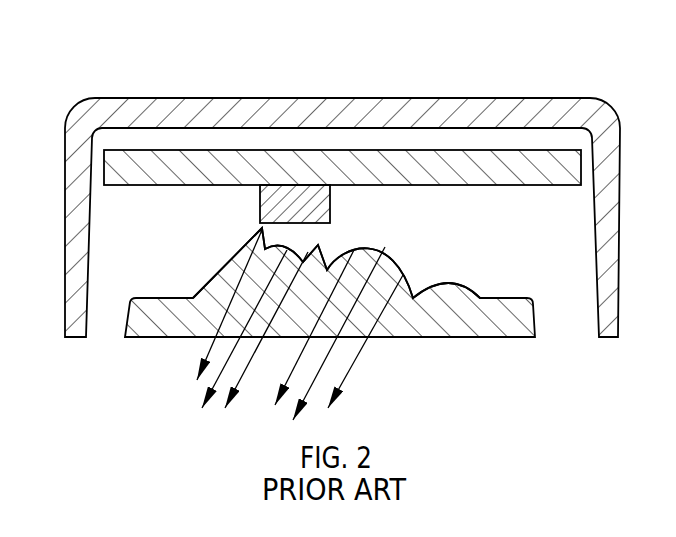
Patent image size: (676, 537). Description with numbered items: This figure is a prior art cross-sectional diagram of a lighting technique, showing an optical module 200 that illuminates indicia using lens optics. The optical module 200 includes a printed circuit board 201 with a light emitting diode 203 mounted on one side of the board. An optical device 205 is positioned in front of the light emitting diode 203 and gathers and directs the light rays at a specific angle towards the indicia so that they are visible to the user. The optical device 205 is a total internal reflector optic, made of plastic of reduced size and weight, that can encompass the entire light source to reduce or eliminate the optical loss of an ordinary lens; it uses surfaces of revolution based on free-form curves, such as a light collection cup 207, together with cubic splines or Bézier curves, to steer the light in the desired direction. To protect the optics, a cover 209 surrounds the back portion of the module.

The optical module 200 is at (93, 56).
The printed circuit board 201 is at (367, 150).
The light emitting diode 203 is at (297, 198).
The optical device 205 is at (535, 321).
The light collection cup 207 is at (312, 228).
The cover 209 is at (203, 98).